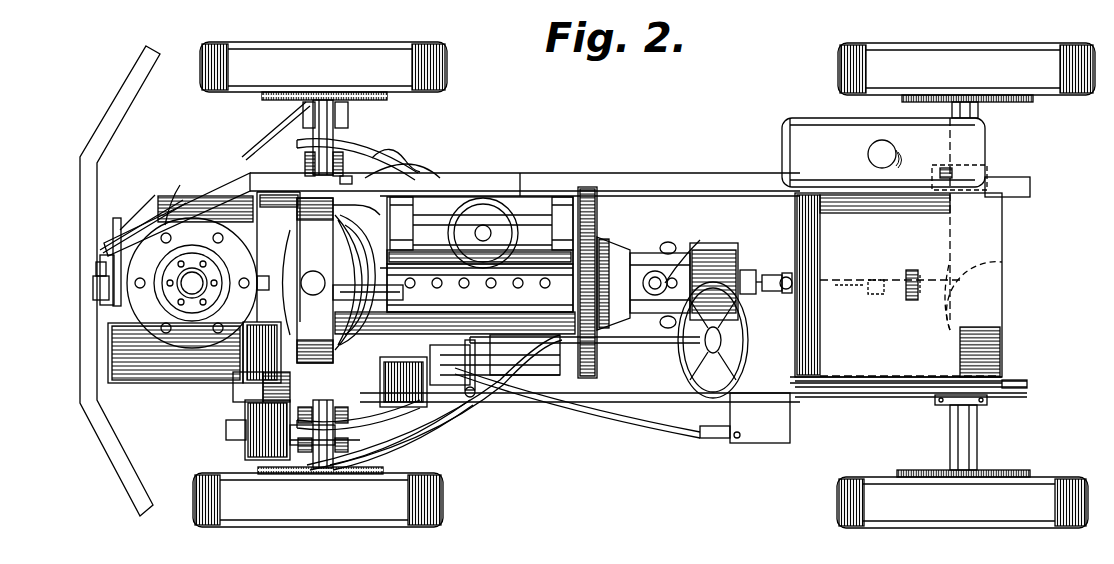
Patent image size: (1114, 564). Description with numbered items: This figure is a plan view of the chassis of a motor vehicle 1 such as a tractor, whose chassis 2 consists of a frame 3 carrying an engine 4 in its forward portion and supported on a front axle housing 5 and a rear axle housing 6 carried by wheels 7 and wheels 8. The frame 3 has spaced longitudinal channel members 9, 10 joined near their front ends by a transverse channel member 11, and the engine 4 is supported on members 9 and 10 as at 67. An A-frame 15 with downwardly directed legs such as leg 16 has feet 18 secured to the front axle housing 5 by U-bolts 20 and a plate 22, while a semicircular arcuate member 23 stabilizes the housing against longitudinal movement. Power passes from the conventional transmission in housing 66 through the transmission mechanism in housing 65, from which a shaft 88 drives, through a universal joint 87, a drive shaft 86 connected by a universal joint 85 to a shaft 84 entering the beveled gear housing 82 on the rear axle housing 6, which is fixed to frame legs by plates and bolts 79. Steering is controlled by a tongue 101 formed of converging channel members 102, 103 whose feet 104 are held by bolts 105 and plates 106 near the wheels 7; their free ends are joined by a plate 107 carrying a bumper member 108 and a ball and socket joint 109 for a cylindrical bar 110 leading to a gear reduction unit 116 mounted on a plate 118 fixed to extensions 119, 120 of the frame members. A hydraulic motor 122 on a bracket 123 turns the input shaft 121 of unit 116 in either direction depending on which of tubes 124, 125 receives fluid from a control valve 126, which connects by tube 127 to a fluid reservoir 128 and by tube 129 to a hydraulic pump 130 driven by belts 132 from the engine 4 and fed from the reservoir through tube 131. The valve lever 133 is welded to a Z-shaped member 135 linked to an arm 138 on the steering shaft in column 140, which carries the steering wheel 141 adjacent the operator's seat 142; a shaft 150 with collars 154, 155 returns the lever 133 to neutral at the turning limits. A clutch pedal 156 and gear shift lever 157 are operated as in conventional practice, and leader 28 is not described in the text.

The motor vehicle 1 is at (528, 172).
The chassis 2 is at (1022, 387).
The frame 3 is at (560, 196).
The engine 4 is at (525, 250).
The front axle housing 5 is at (352, 132).
The rear axle housing 6 is at (977, 452).
The front wheels 7 is at (345, 508).
The rear wheels 8 is at (1005, 522).
The longitudinal channel member 9 is at (820, 395).
The longitudinal channel member 10 is at (685, 186).
The transverse channel member 11 is at (347, 205).
The A-frame 15 is at (525, 184).
The A-frame leg 16 is at (343, 186).
The feet 18 is at (307, 184).
The U-bolts 20 is at (345, 168).
The plate 22 is at (305, 162).
The arcuate member 23 is at (405, 160).
The pipe 28 is at (420, 170).
The transmission housing 65 is at (718, 243).
The transmission housing 66 is at (645, 250).
The engine support 67 is at (445, 235).
The plates and bolts 79 is at (993, 403).
The housing 82 is at (925, 296).
The shaft 84 is at (910, 270).
The universal joint 85 is at (876, 280).
The drive shaft 86 is at (850, 286).
The universal joint 87 is at (776, 273).
The shaft 88 is at (752, 268).
The tongue 101 is at (200, 180).
The channel member 102 is at (232, 390).
The channel member 103 is at (243, 158).
The feet 104 is at (300, 92).
The bolts 105 is at (330, 94).
The plates 106 is at (348, 102).
The plate 107 is at (116, 218).
The bumper member 108 is at (92, 155).
The ball and socket joint 109 is at (98, 305).
The cylindrical bar 110 is at (103, 312).
The gear reduction unit 116 is at (160, 200).
The plate 118 is at (250, 218).
The frame member extension 119 is at (235, 385).
The frame member extension 120 is at (180, 185).
The input shaft 121 is at (245, 415).
The hydraulic motor 122 is at (260, 450).
The bracket 123 is at (228, 432).
The tube 124 is at (303, 473).
The tube 125 is at (428, 436).
The control valve 126 is at (560, 330).
The tube 127 is at (703, 438).
The fluid reservoir 128 is at (760, 443).
The tube 129 is at (480, 288).
The hydraulic pump 130 is at (434, 402).
The tube 131 is at (535, 412).
The belts 132 is at (392, 297).
The lever 133 is at (470, 400).
The Z-shaped member 135 is at (476, 279).
The arm 138 is at (470, 400).
The steering column 140 is at (632, 340).
The steering wheel 141 is at (748, 342).
The seat 142 is at (1000, 270).
The shaft 150 is at (315, 280).
The collar 154 is at (280, 322).
The collar 155 is at (323, 282).
The clutch pedal 156 is at (665, 280).
The gear shift lever 157 is at (672, 278).